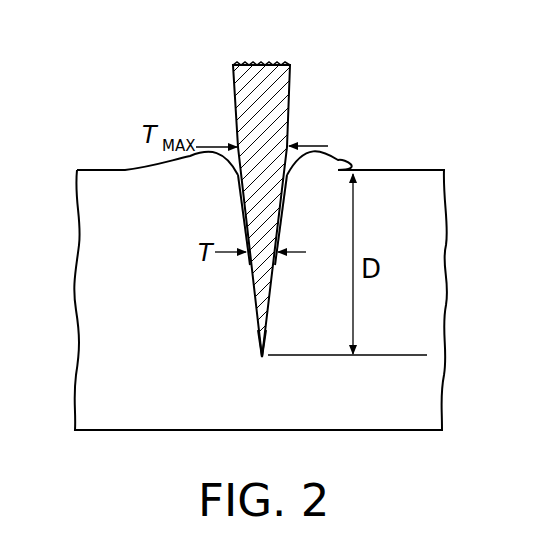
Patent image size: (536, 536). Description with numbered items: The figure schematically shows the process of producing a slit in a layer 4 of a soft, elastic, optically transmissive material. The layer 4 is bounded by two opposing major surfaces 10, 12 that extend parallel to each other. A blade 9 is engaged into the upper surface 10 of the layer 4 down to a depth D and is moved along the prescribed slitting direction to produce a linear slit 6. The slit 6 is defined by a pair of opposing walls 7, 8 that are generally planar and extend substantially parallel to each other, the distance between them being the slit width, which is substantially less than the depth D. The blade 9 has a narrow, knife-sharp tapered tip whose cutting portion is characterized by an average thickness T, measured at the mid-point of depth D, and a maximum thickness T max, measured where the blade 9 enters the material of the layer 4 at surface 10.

The layer 4 is at (378, 185).
The slit 6 is at (256, 327).
The wall 7 is at (238, 173).
The wall 8 is at (285, 174).
The blade 9 is at (286, 101).
The surface 10 is at (98, 170).
The surface 12 is at (130, 432).